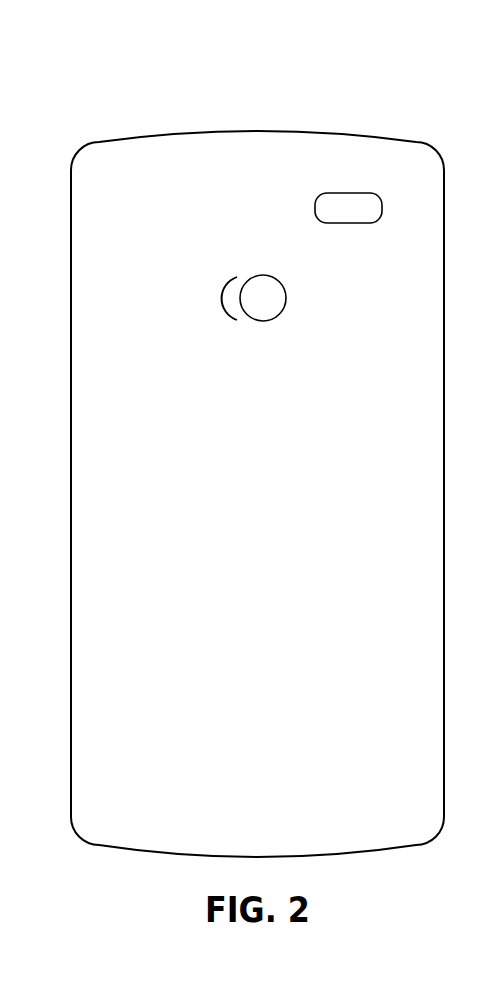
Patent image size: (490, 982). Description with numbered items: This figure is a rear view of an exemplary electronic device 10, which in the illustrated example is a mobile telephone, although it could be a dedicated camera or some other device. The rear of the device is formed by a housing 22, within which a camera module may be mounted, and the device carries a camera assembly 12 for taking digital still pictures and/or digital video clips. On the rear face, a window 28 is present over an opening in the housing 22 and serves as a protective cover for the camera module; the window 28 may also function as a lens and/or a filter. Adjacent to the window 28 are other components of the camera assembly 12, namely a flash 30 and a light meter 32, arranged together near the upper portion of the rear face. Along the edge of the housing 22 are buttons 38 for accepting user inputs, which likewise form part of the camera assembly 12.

The electronic device 10 is at (198, 108).
The camera assembly 12 is at (240, 249).
The housing 22 is at (95, 691).
The window 28 is at (262, 297).
The flash 30 is at (324, 209).
The light meter 32 is at (217, 292).
The buttons 38 is at (0, 202).